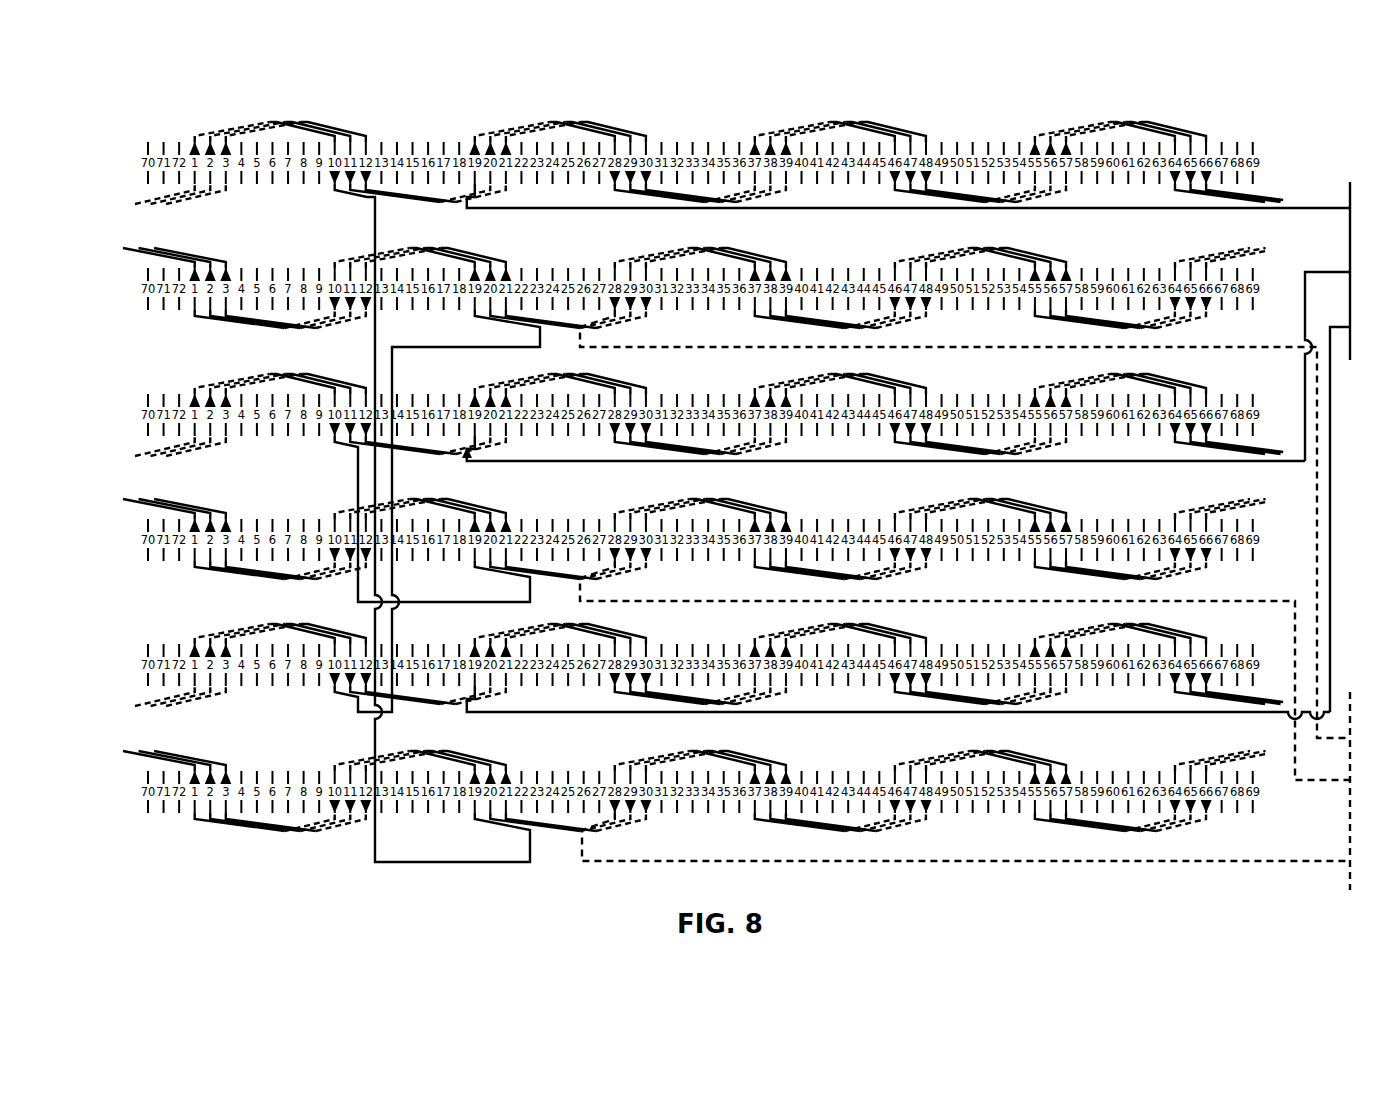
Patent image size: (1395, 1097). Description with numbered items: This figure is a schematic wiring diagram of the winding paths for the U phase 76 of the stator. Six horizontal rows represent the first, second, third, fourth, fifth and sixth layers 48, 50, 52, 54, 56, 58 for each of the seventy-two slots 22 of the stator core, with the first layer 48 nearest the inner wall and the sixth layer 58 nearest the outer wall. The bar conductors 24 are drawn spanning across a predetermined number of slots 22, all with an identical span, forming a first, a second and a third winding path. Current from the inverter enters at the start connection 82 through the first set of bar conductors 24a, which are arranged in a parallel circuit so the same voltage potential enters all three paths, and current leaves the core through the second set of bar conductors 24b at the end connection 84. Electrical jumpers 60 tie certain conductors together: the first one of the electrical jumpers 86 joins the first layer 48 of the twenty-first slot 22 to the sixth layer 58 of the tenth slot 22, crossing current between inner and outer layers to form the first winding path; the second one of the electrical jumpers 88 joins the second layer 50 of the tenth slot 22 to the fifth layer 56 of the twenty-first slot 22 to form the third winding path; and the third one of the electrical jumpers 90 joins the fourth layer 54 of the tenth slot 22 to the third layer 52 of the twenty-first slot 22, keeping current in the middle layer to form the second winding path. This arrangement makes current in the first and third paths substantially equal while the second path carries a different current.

The slots 22 is at (138, 289).
The bar conductors 24 is at (1172, 120).
The first set of bar conductors 24a is at (506, 190).
The second set of bar conductors 24b is at (611, 267).
The first layer 48 is at (96, 751).
The second layer 50 is at (96, 624).
The third layer 52 is at (96, 499).
The fourth layer 54 is at (96, 374).
The fifth layer 56 is at (96, 248).
The sixth layer 58 is at (96, 122).
The electrical jumpers 60 is at (437, 523).
The first one of the electrical jumpers 86 is at (375, 240).
The second one of the electrical jumpers 88 is at (412, 347).
The third one of the electrical jumpers 90 is at (415, 602).
The U phase 76 is at (182, 108).
The start connection 82 is at (1352, 235).
The end connection 84 is at (1351, 755).